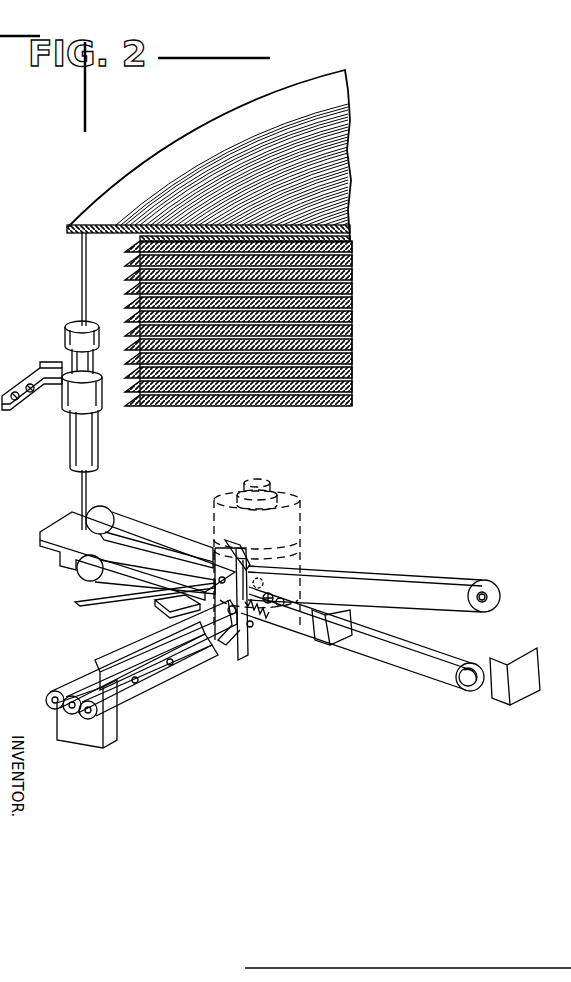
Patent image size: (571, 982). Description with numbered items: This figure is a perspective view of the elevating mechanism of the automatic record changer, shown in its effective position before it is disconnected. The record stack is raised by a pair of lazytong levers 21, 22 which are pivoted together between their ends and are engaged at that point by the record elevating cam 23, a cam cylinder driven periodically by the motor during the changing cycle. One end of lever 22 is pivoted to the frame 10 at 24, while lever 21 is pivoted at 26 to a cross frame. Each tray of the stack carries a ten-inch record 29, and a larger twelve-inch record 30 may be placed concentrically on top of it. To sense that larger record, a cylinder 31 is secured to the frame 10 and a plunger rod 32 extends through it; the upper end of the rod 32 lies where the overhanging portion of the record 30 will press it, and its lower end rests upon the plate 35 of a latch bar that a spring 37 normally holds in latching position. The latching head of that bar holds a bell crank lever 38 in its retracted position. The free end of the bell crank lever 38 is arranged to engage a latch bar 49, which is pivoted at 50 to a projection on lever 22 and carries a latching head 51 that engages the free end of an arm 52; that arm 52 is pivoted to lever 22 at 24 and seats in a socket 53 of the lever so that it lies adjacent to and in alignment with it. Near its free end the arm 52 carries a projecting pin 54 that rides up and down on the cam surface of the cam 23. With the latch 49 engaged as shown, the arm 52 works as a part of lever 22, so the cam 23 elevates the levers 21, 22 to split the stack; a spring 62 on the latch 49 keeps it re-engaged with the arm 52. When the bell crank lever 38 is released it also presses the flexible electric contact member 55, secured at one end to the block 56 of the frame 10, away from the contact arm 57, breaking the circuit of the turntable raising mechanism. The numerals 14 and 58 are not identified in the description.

The frame 10 is at (522, 682).
The louver slats 14 is at (139, 408).
The lazytong lever 21 is at (128, 576).
The lazytong lever 22 is at (146, 538).
The record elevating cam 23 is at (300, 520).
The pivot 24 is at (468, 685).
The pivot 26 is at (488, 598).
The 10-inch record 29 is at (184, 408).
The 12-inch record 30 is at (90, 203).
The cylinder 31 is at (82, 432).
The plunger rod 32 is at (82, 270).
The plate 35 is at (60, 530).
The spring 37 is at (80, 600).
The bell crank lever 38 is at (170, 607).
The latch bar 49 is at (235, 660).
The pivot 50 is at (255, 623).
The latching head 51 is at (250, 575).
The arm 52 is at (378, 648).
The socket 53 is at (345, 640).
The projecting pin 54 is at (278, 612).
The flexible electric contact member 55 is at (190, 638).
The block 56 is at (60, 722).
The contact arm 57 is at (90, 664).
The link 58 is at (130, 688).
The spring 62 is at (218, 630).